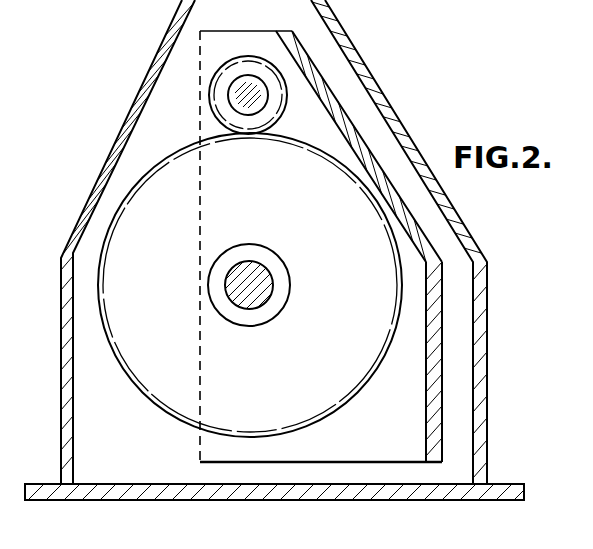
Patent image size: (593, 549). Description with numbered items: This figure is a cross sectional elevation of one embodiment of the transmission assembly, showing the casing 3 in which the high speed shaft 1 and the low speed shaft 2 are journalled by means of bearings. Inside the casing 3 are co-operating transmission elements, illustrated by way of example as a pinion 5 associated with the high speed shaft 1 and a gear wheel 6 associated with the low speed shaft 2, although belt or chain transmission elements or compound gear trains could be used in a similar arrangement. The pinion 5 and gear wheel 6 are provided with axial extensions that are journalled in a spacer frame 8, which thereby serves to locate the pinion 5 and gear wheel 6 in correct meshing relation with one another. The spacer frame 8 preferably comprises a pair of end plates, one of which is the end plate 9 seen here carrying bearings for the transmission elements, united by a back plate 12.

The high speed shaft 1 is at (247, 78).
The low speed shaft 2 is at (262, 277).
The casing 3 is at (141, 88).
The pinion 5 is at (233, 72).
The gear wheel 6 is at (160, 386).
The spacer frame 8 is at (397, 443).
The end plate 9 is at (202, 448).
The back plate 12 is at (347, 123).